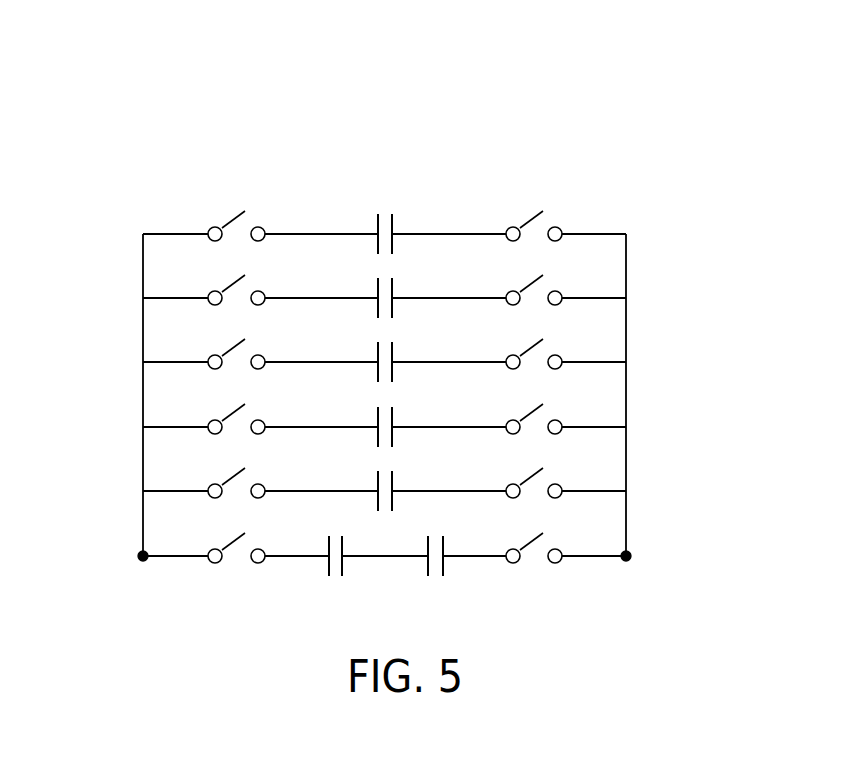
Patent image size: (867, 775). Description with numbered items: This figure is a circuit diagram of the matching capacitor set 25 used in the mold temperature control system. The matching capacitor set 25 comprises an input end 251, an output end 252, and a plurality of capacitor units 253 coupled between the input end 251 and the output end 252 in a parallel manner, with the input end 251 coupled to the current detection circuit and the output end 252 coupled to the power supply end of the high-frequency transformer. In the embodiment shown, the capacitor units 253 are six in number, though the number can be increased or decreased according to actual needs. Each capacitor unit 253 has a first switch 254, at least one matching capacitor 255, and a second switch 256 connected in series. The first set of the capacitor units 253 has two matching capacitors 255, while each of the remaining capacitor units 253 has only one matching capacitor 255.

The matching capacitor set 25 is at (678, 100).
The input end 251 is at (145, 559).
The output end 252 is at (628, 559).
The capacitor unit 253 is at (605, 213).
The first switch 254 is at (219, 198).
The matching capacitor 255 is at (377, 190).
The second switch 256 is at (518, 198).